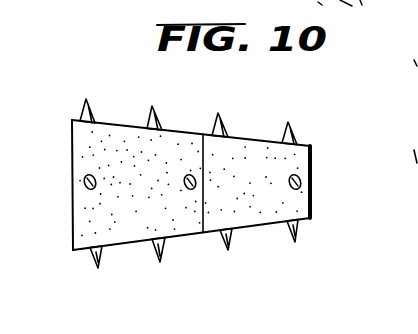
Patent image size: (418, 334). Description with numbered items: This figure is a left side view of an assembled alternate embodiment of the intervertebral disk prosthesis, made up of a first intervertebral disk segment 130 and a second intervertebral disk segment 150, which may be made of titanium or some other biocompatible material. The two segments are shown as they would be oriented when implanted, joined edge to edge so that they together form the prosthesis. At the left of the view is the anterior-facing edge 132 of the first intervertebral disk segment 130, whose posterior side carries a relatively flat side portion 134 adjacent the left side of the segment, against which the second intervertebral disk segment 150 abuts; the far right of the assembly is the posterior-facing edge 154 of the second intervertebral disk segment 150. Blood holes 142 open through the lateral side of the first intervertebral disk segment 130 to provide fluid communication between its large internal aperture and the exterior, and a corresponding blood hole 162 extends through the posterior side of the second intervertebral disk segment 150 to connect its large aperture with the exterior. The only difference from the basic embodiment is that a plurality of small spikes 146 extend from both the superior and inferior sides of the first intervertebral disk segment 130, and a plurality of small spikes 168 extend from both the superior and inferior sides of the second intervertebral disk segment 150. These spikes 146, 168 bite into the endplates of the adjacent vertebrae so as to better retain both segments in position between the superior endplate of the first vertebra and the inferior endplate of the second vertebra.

The first intervertebral disk segment 130 is at (66, 140).
The anterior-facing edge 132 is at (72, 226).
The flat side portion 134 is at (400, 111).
The blood holes 142 is at (93, 181).
The small spikes 146 is at (148, 114).
The second intervertebral disk segment 150 is at (312, 162).
The posterior-facing edge 154 is at (312, 180).
The blood hole 162 is at (298, 188).
The small spikes 168 is at (287, 128).